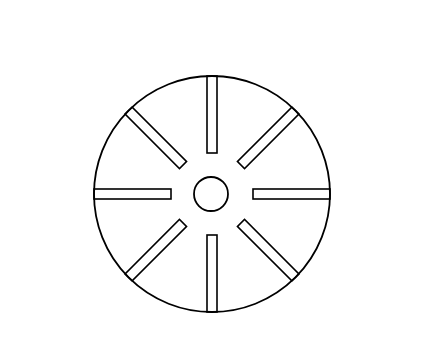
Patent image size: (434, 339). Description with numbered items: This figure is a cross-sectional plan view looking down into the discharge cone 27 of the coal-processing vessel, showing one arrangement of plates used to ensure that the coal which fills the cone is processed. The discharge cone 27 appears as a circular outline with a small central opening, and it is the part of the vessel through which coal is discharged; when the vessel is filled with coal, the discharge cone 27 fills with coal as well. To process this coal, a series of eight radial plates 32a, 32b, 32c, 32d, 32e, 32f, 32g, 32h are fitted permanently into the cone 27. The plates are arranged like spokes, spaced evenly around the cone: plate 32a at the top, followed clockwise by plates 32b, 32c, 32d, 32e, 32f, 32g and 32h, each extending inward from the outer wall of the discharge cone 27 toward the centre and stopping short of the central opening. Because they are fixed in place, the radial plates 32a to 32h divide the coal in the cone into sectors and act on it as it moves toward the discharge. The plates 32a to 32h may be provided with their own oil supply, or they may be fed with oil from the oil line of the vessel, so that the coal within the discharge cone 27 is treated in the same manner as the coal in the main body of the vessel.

The discharge cone 27 is at (275, 93).
The radial plate 32a is at (207, 93).
The radial plate 32b is at (290, 132).
The radial plate 32c is at (317, 189).
The radial plate 32d is at (283, 263).
The radial plate 32e is at (213, 287).
The radial plate 32f is at (130, 268).
The radial plate 32g is at (107, 198).
The radial plate 32h is at (142, 110).